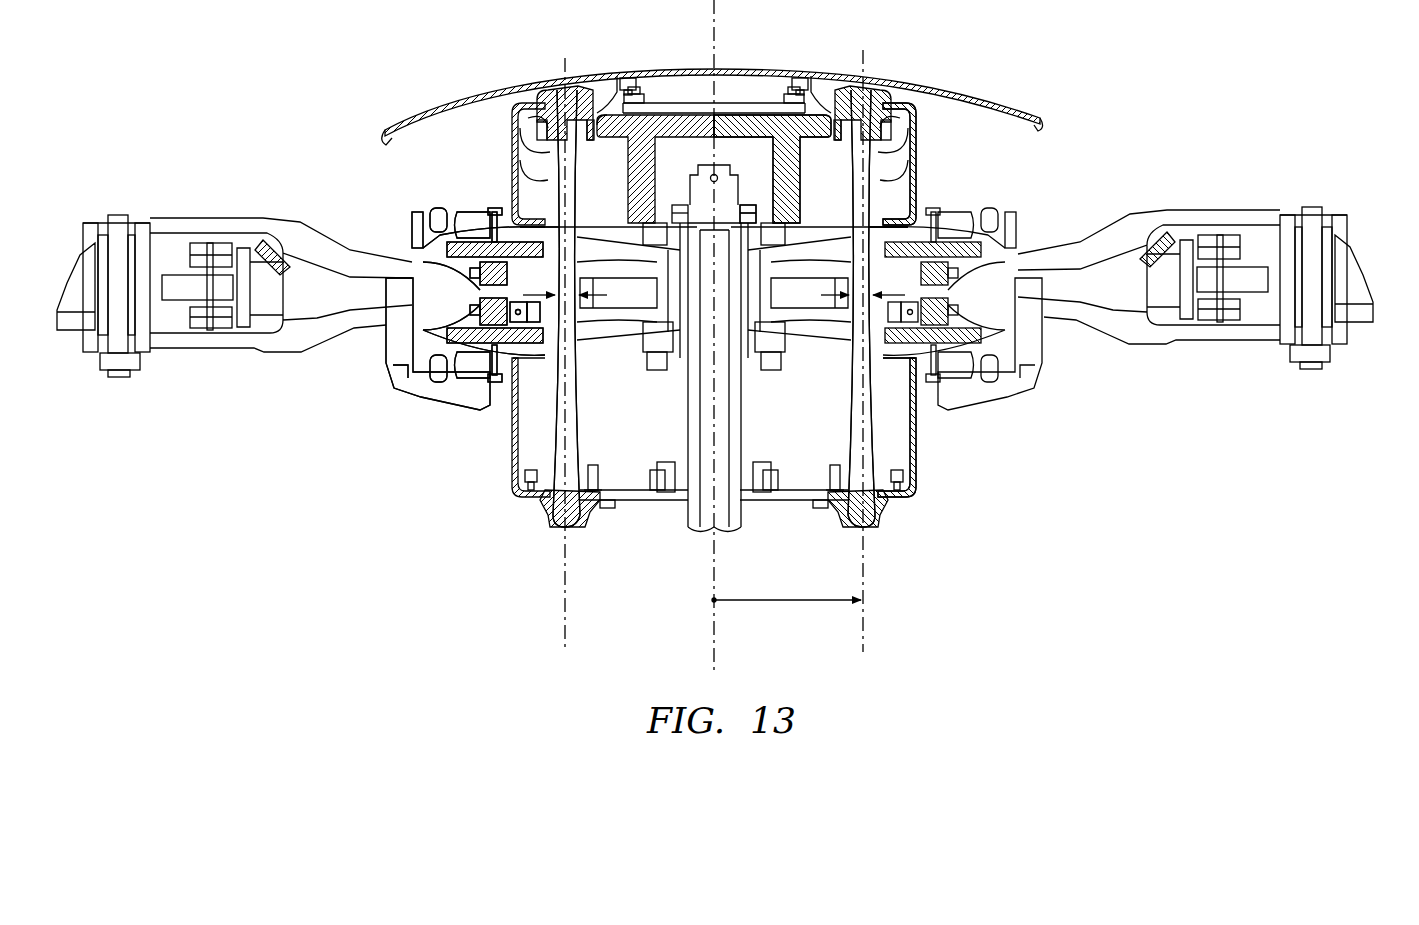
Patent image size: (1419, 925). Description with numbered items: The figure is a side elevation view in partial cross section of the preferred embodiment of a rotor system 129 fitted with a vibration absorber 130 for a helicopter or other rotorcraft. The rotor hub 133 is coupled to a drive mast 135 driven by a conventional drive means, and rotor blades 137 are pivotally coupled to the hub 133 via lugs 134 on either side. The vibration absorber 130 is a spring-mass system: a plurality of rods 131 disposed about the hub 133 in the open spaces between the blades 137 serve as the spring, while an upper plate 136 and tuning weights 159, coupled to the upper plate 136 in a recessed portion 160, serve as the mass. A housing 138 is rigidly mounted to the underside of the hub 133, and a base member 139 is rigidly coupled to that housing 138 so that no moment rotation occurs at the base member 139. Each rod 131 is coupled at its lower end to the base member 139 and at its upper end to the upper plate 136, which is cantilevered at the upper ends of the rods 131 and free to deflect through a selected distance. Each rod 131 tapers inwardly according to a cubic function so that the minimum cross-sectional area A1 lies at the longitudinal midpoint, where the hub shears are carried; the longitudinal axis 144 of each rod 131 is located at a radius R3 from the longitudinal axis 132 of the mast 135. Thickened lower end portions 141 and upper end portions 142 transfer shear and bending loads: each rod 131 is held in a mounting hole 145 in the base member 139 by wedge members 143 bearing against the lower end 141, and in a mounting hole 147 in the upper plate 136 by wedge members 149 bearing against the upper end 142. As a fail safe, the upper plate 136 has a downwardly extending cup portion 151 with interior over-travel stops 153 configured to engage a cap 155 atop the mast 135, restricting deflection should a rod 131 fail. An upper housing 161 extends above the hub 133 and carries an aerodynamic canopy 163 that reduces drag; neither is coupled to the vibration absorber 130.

The rotor system 129 is at (333, 170).
The vibration absorber 130 is at (928, 165).
The rods 131 is at (578, 394).
The longitudinal axis of mast 132 is at (714, 655).
The rotor hub 133 is at (824, 352).
The lugs 134 is at (190, 220).
The drive mast 135 is at (686, 515).
The upper plate 136 is at (612, 136).
The rotor blades 137 is at (90, 350).
The housing 138 is at (505, 418).
The base member 139 is at (592, 527).
The lower end portions 141 is at (565, 505).
The upper end portions 142 is at (576, 88).
The wedge members 143 is at (536, 462).
The longitudinal axis of rod 144 is at (565, 638).
The mounting hole in base member 145 is at (557, 528).
The mounting hole in upper plate 147 is at (560, 82).
The wedge members 149 is at (540, 153).
The cup portion 151 is at (805, 168).
The over-travel stop 153 is at (632, 200).
The cap 155 is at (696, 182).
The tuning weights 159 is at (680, 103).
The recessed portion 160 is at (830, 95).
The upper housing 161 is at (510, 182).
The aerodynamic canopy 163 is at (432, 108).
The minimum cross-sectional area A1 is at (714, 296).
The radius R3 is at (785, 600).